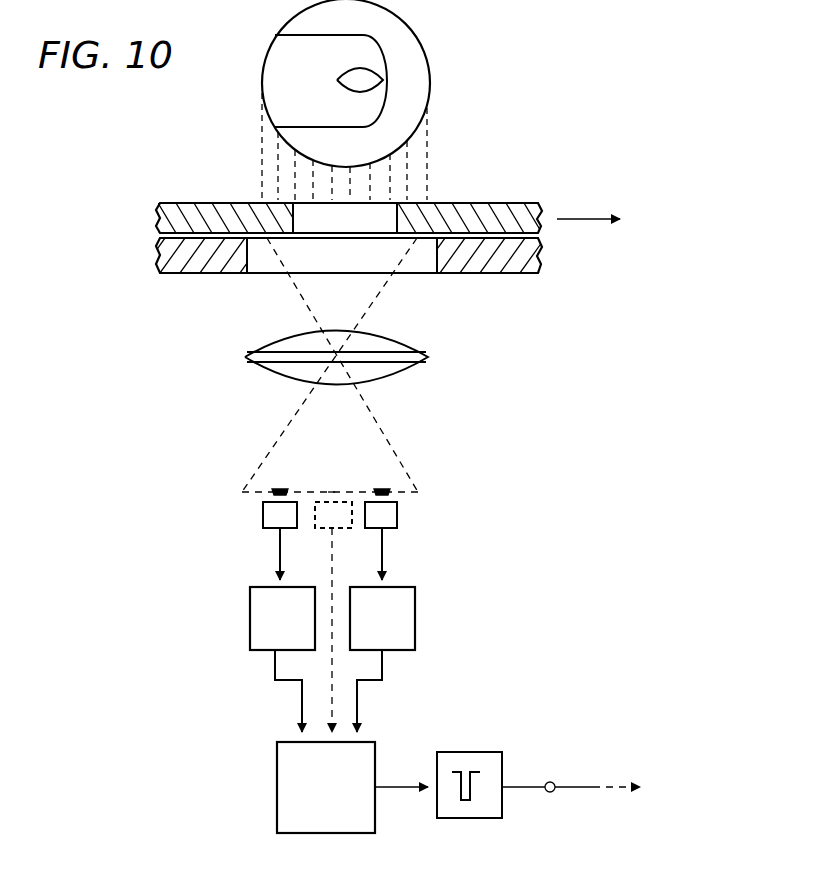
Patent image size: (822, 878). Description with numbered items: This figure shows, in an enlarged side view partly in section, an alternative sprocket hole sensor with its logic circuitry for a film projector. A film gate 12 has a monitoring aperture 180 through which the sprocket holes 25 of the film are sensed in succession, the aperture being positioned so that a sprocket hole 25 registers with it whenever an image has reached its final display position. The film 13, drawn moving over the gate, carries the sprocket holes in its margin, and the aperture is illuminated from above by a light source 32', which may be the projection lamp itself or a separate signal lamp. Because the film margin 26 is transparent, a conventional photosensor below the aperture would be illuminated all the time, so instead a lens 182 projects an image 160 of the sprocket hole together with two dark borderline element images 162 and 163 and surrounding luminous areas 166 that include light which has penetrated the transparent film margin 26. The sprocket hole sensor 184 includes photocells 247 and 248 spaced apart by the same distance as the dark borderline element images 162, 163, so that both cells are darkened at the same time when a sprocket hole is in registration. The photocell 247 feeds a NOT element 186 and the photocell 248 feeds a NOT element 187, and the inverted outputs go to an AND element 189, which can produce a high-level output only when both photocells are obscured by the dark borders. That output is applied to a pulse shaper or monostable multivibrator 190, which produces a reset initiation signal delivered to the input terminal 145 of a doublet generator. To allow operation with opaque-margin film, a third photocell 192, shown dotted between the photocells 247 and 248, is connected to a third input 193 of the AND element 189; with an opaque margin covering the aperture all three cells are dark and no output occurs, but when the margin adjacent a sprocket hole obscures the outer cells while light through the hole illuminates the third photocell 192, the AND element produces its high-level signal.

The light source 32' is at (368, 100).
The record member 13 is at (174, 214).
The sprocket hole 25 is at (377, 213).
The film margin 26 is at (521, 204).
The film gate 12 is at (523, 270).
The monitoring aperture 180 is at (420, 267).
The lens 182 is at (246, 357).
The luminous areas 166 is at (241, 493).
The dark borderline element image 162 is at (278, 489).
The dark borderline element image 163 is at (385, 489).
The image of the sprocket hole 160 is at (353, 469).
The sprocket hole sensor 184 is at (233, 582).
The photocell 247 is at (263, 512).
The photocell 248 is at (398, 523).
The third photocell 192 is at (323, 529).
The NOT element 186 is at (250, 620).
The NOT element 187 is at (416, 625).
The third input 193 is at (330, 688).
The AND element 189 is at (277, 788).
The pulse shaper or monostable multivibrator 190 is at (502, 815).
The input terminal 145 is at (553, 782).